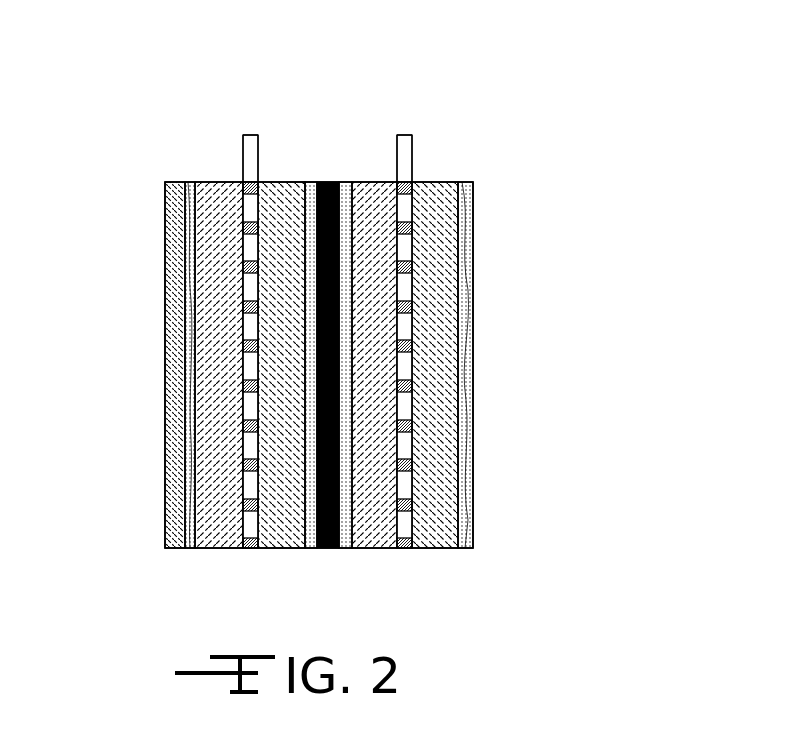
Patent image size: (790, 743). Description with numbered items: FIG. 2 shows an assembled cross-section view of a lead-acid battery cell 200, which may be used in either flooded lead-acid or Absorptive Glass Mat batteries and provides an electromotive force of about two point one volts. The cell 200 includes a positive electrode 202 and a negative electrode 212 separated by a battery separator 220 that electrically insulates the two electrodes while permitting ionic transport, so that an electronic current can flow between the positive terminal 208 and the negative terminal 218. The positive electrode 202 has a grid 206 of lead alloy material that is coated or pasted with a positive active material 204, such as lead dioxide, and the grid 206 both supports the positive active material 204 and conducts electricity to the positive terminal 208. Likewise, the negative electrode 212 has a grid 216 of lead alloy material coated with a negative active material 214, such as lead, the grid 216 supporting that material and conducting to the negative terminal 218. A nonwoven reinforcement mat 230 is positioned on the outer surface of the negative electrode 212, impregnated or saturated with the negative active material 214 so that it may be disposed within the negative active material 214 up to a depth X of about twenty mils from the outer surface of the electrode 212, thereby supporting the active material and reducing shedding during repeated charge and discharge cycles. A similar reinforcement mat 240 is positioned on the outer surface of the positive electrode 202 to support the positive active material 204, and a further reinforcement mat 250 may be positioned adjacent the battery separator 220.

The lead-acid battery cell 200 is at (543, 182).
The positive electrode 202 is at (456, 335).
The positive active material 204 is at (370, 550).
The grid 206 is at (413, 267).
The positive terminal 208 is at (412, 163).
The negative electrode 212 is at (184, 347).
The negative active material 214 is at (223, 548).
The grid 216 is at (243, 307).
The negative terminal 218 is at (243, 165).
The battery separator 220 is at (327, 550).
The reinforcement mat 230 is at (190, 549).
The reinforcement mat 240 is at (473, 415).
The reinforcement mat 250 is at (312, 182).
The depth X is at (210, 574).